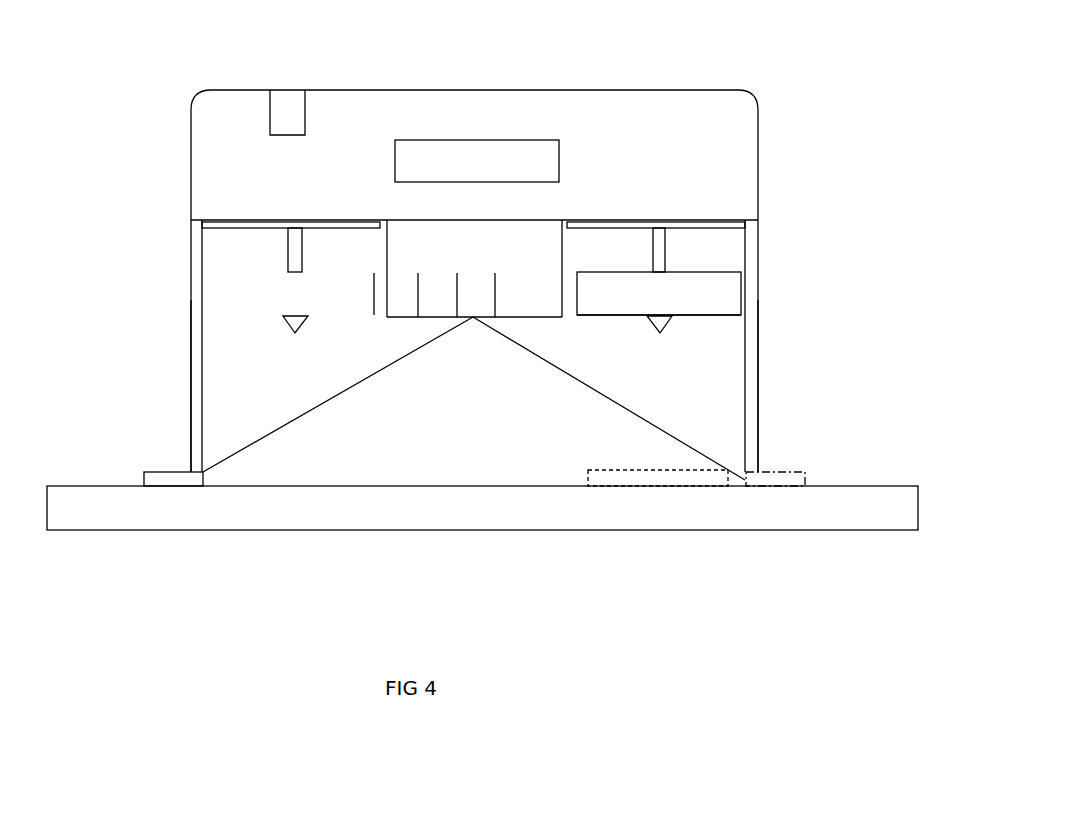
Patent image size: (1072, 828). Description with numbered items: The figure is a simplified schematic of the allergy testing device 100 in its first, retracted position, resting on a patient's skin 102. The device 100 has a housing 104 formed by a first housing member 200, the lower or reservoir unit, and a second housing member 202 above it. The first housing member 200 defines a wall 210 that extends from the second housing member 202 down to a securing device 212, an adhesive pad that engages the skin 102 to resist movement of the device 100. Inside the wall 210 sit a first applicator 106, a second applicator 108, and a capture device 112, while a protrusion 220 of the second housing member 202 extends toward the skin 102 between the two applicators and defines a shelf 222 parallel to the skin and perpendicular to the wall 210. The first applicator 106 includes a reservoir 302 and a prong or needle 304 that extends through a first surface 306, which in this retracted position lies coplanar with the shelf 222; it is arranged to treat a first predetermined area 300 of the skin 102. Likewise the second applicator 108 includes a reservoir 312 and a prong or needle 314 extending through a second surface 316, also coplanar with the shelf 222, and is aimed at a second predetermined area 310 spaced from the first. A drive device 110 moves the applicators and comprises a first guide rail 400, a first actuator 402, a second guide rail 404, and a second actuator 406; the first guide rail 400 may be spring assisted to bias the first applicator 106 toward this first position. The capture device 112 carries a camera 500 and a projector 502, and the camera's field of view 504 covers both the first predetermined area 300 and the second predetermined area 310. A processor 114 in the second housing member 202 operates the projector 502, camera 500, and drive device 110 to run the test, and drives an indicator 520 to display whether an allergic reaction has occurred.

The allergy testing device 100 is at (864, 91).
The patient's skin 102 is at (921, 468).
The housing 104 is at (798, 255).
The first applicator 106 is at (253, 350).
The second applicator 108 is at (685, 343).
The drive device 110 is at (271, 255).
The capture device 112 is at (475, 262).
The processor 114 is at (560, 160).
The first housing member 200 is at (759, 373).
The second housing member 202 is at (769, 165).
The wall 210 is at (750, 412).
The securing device 212 is at (138, 470).
The protrusion 220 is at (537, 327).
The shelf 222 is at (392, 318).
The first predetermined area 300 is at (286, 472).
The reservoir 302 is at (203, 292).
The prong or needle 304 is at (298, 323).
The first surface 306 is at (230, 313).
The second predetermined area 310 is at (651, 462).
The reservoir 312 is at (746, 293).
The prong or needle 314 is at (652, 325).
The second surface 316 is at (697, 315).
The first guide rail 400 is at (297, 250).
The first actuator 402 is at (227, 227).
The second guide rail 404 is at (662, 252).
The second actuator 406 is at (588, 222).
The camera 500 is at (495, 296).
The projector 502 is at (433, 274).
The field of view 504 is at (665, 426).
The indicator 520 is at (270, 111).